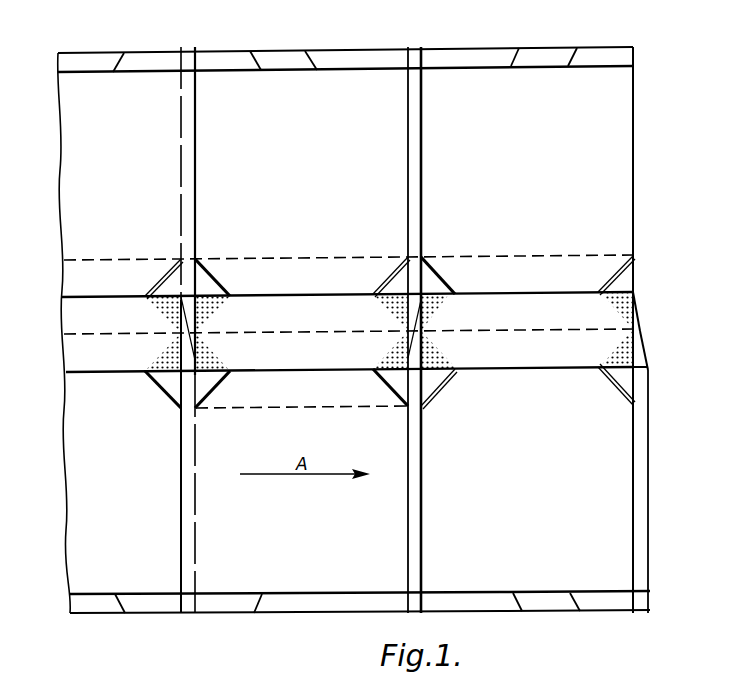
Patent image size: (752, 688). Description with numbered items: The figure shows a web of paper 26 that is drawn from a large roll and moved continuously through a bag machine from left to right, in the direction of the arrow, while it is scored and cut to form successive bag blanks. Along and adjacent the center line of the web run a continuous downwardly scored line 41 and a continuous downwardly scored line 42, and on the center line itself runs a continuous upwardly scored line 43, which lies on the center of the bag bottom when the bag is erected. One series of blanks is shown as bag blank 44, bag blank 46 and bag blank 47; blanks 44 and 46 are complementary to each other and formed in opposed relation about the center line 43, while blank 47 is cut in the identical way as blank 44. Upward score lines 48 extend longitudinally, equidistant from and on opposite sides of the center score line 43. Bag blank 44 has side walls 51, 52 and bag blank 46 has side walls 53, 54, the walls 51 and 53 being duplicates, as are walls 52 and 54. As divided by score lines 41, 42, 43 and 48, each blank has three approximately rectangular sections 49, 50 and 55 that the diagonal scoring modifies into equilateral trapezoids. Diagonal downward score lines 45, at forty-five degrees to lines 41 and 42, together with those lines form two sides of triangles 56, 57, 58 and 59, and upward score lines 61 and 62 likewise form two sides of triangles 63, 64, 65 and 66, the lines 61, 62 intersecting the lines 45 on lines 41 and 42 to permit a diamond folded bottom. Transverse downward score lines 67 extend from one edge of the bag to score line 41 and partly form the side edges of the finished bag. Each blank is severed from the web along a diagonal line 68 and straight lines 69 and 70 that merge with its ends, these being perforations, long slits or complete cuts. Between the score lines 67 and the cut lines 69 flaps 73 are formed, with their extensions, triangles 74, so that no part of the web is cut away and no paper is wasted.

The web of paper 26 is at (582, 44).
The downwardly scored line 41 is at (96, 296).
The downwardly scored line 42 is at (102, 370).
The upwardly scored line 43 is at (100, 333).
The bag blank 44 is at (597, 576).
The score lines 45 is at (446, 270).
The bag blank 46 is at (371, 576).
The bag blank 47 is at (135, 577).
The upward score lines 48 is at (104, 259).
The rectangular section 49 is at (519, 344).
The rectangular section 50 is at (539, 314).
The side wall 51 is at (527, 158).
The side wall 52 is at (527, 498).
The side wall 53 is at (297, 498).
The side wall 54 is at (295, 158).
The rectangular section 55 is at (541, 274).
The triangle 56 is at (437, 284).
The triangle 57 is at (622, 276).
The triangle 58 is at (620, 382).
The triangle 59 is at (437, 379).
The score line 61 is at (602, 304).
The score line 62 is at (438, 310).
The triangle 63 is at (440, 302).
The triangle 64 is at (638, 300).
The triangle 65 is at (646, 350).
The triangle 66 is at (440, 364).
The score lines 67 is at (424, 532).
The diagonal line 68 is at (396, 322).
The straight line 69 is at (406, 531).
The straight line 70 is at (423, 170).
The flap 73 is at (650, 469).
The triangle 74 is at (638, 367).